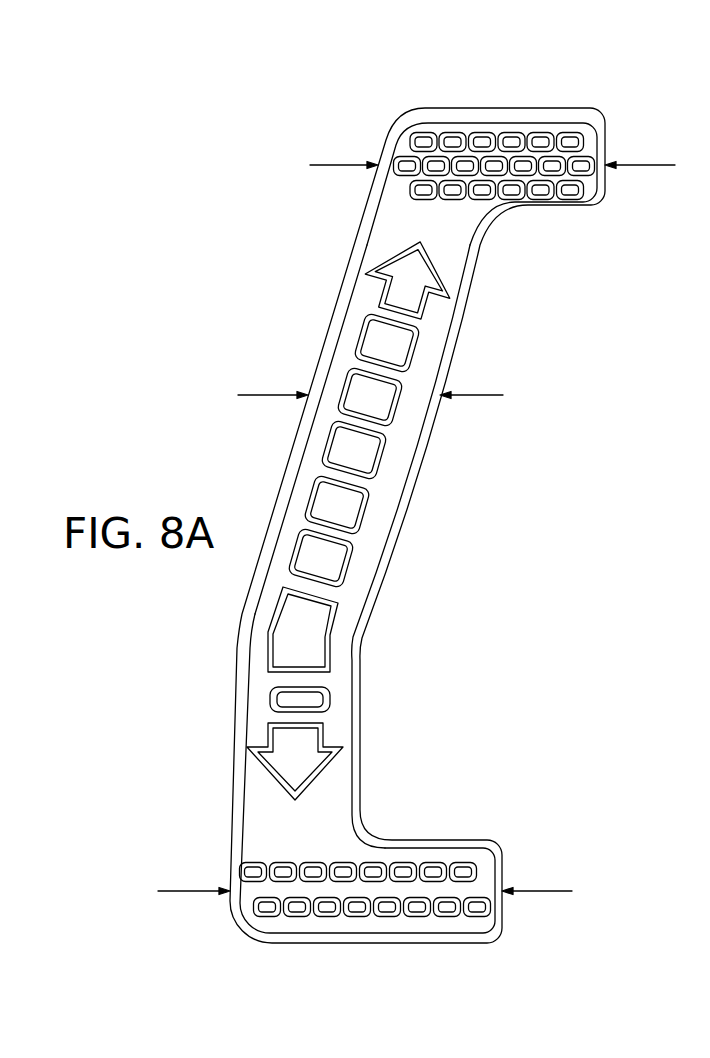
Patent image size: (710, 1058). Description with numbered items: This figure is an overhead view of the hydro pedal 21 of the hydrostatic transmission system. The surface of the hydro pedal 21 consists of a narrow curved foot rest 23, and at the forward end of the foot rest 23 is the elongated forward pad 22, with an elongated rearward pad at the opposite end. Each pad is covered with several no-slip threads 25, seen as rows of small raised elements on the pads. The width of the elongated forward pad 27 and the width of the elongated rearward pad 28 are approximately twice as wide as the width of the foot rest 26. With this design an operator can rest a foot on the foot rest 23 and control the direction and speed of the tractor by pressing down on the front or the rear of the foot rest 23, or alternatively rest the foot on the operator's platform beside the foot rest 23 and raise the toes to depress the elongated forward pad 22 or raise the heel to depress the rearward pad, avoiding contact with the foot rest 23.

The hydro pedal 21 is at (500, 934).
The elongated forward pad 22 is at (557, 202).
The foot rest 23 is at (403, 512).
The no-slip threads 25 is at (516, 132).
The width of the foot rest 26 is at (473, 396).
The width of the elongated forward pad 27 is at (633, 166).
The width of the elongated rearward pad 28 is at (533, 891).